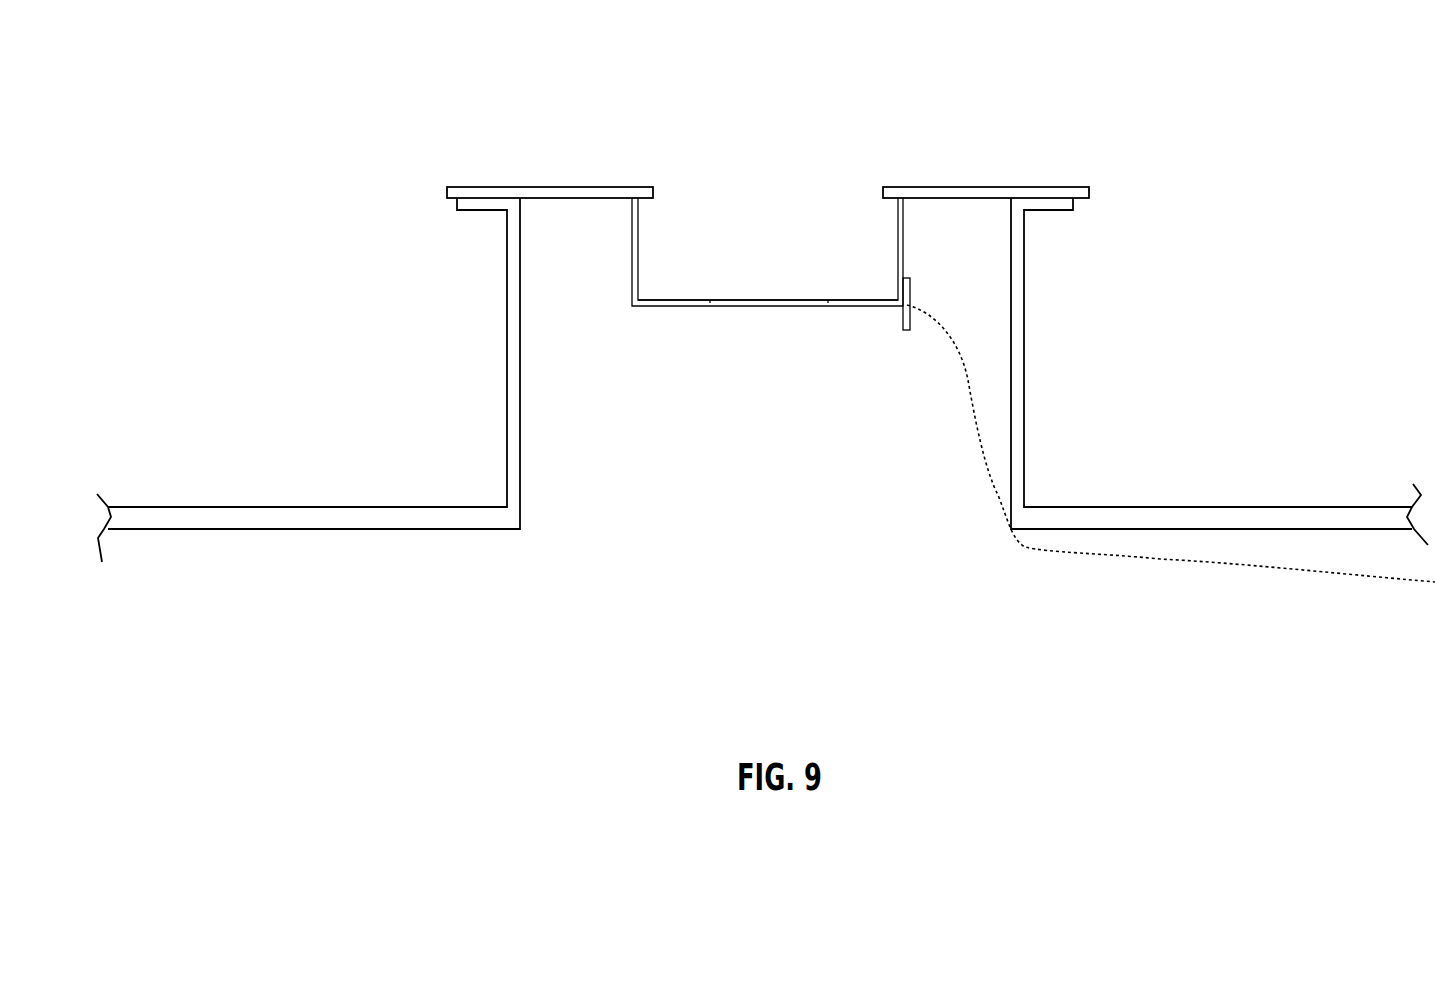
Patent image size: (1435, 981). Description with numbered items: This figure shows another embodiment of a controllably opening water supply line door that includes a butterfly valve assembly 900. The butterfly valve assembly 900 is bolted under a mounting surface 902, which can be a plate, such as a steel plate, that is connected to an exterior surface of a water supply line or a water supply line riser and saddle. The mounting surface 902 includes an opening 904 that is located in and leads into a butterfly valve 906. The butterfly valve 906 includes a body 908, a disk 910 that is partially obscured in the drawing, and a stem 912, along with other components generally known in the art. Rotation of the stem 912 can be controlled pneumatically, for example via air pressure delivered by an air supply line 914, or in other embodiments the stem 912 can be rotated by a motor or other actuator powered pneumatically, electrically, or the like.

The butterfly valve assembly 900 is at (1244, 86).
The mounting surface 902 is at (557, 197).
The opening 904 is at (873, 163).
The butterfly valve 906 is at (765, 366).
The body 908 is at (631, 268).
The disk 910 is at (722, 303).
The stem 912 is at (910, 286).
The air supply line 914 is at (1253, 563).